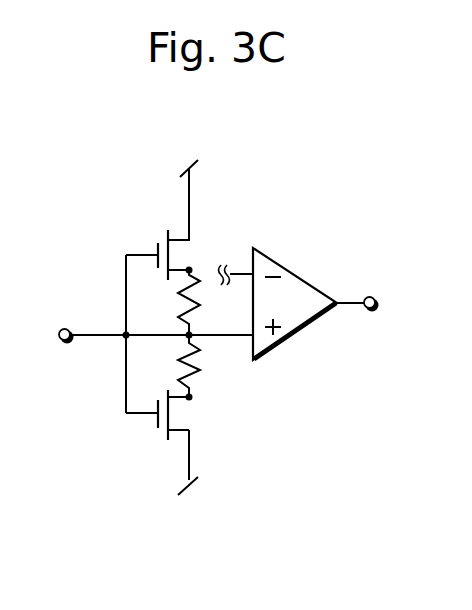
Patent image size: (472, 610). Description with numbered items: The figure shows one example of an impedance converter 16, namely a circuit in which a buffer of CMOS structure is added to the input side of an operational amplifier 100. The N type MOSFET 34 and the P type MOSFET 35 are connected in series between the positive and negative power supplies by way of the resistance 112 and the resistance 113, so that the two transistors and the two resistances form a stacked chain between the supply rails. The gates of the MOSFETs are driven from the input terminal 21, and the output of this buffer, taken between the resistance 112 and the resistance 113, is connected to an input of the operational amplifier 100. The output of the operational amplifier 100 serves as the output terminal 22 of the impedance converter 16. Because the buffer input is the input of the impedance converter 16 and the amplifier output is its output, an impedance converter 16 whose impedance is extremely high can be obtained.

The impedance converter 16 is at (264, 147).
The input terminal 21 is at (62, 329).
The output terminal 22 is at (376, 295).
The N type MOSFET 34 is at (156, 247).
The P type MOSFET 35 is at (155, 427).
The operational amplifier 100 is at (268, 252).
The resistance 112 is at (204, 282).
The resistance 113 is at (199, 380).